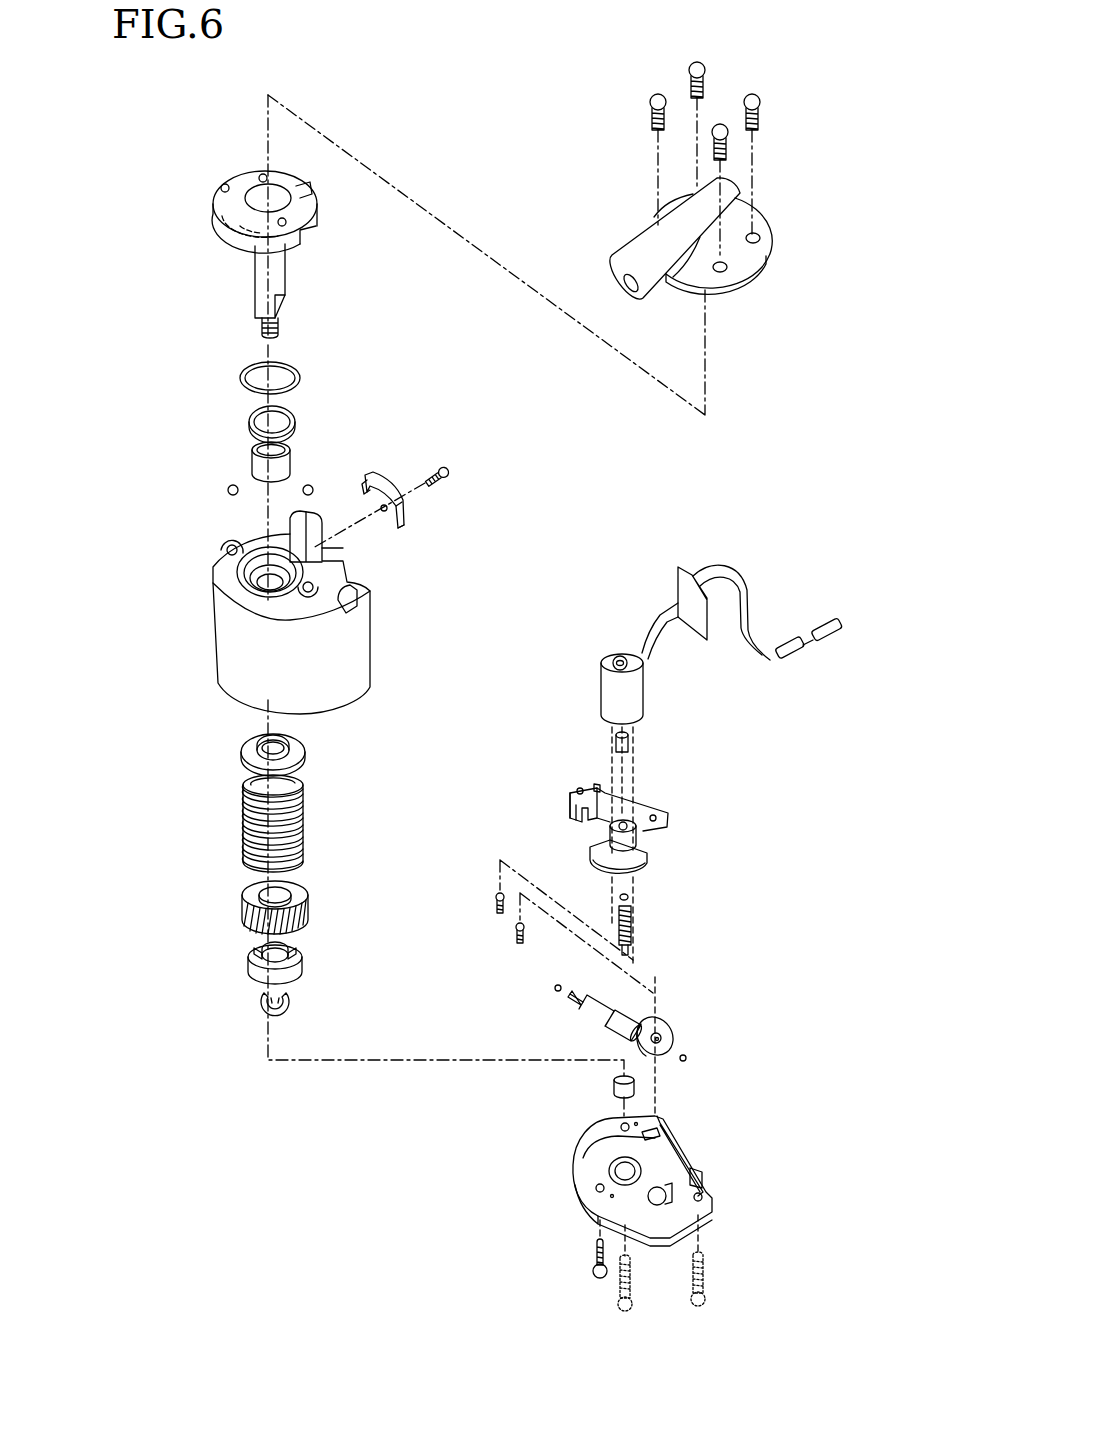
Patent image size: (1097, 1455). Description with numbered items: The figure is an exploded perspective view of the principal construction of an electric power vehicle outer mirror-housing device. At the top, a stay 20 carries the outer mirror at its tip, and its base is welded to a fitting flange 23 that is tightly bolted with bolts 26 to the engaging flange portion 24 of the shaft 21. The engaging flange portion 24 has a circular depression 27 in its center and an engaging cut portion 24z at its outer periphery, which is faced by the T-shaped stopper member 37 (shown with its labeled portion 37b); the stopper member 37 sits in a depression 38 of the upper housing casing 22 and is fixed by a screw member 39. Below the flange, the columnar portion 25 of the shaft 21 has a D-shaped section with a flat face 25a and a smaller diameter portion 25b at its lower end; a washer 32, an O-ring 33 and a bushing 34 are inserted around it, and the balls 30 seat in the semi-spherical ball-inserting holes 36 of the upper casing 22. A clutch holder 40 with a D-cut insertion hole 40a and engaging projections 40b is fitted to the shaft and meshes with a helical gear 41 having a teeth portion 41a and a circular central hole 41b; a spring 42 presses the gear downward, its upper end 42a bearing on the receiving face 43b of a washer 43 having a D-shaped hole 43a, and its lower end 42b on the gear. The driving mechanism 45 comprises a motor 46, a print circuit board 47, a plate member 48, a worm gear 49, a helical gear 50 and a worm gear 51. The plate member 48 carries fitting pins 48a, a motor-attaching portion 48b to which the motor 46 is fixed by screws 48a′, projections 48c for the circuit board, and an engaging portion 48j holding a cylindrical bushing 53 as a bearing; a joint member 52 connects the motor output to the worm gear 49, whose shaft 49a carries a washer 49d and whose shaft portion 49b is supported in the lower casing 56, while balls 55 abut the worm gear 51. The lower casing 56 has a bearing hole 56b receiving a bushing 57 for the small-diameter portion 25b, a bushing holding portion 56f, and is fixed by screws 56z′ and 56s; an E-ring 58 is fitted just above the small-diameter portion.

The stay 20 is at (636, 239).
The shaft 21 is at (278, 216).
The upper housing casing 22 is at (262, 599).
The fitting flange 23 is at (700, 271).
The engaging flange portion 24 is at (261, 171).
The engaging cut portion 24z is at (232, 178).
The columnar portion 25 is at (274, 293).
The flat face 25a is at (286, 302).
The smaller diameter portion 25b is at (262, 326).
The bolts 26 is at (650, 120).
The circular depression 27 is at (258, 202).
The ball 30 is at (229, 485).
The washer 32 is at (296, 418).
The O-ring 33 is at (300, 372).
The bushing 34 is at (252, 458).
The semi-spherical ball-inserting holes 36 is at (230, 548).
The stopper member 37 is at (401, 461).
The tab 37b is at (372, 478).
The depression 38 is at (313, 548).
The screw member 39 is at (448, 475).
The clutch holder 40 is at (271, 977).
The D-cut shaped insertion hole 40a is at (288, 944).
The engaging projections 40b is at (256, 954).
The helical gear 41 is at (216, 909).
The teeth portion 41a is at (253, 927).
The circular central hole 41b is at (256, 890).
The spring 42 is at (251, 822).
The upper end 42a is at (304, 788).
The lower end 42b is at (305, 866).
The washer 43 is at (249, 740).
The D-shaped hole 43a is at (255, 744).
The receiving face 43b is at (298, 747).
The driving mechanism 45 is at (222, 886).
The motor 46 is at (645, 685).
The print circuit board 47 is at (680, 600).
The plate member 48 is at (642, 804).
The fitting pins 48a is at (580, 788).
The screws 48a′ is at (497, 902).
The motor-attaching portion 48b is at (647, 866).
The projections 48c is at (605, 787).
The engaging portion 48j is at (570, 807).
The worm gear 49 is at (670, 949).
The shaft 49a is at (632, 915).
The shaft portion 49b is at (640, 958).
The washer 49d is at (629, 897).
The helical gear 50 is at (670, 1030).
The worm gear 51 is at (611, 1007).
The joint member 52 is at (634, 738).
The cylindrical bushing 53 is at (590, 1013).
The balls 55 is at (558, 985).
The lower casing 56 is at (662, 1174).
The bearing hole 56b is at (612, 1168).
The bushing holding portion 56f is at (702, 1172).
The screws 56s is at (704, 1275).
The screw 56z′ is at (593, 1254).
The bushing 57 is at (636, 1087).
The E-ring 58 is at (260, 1012).